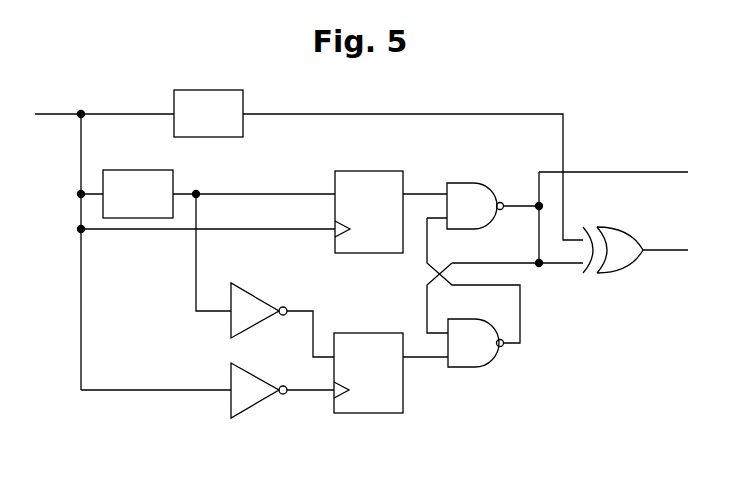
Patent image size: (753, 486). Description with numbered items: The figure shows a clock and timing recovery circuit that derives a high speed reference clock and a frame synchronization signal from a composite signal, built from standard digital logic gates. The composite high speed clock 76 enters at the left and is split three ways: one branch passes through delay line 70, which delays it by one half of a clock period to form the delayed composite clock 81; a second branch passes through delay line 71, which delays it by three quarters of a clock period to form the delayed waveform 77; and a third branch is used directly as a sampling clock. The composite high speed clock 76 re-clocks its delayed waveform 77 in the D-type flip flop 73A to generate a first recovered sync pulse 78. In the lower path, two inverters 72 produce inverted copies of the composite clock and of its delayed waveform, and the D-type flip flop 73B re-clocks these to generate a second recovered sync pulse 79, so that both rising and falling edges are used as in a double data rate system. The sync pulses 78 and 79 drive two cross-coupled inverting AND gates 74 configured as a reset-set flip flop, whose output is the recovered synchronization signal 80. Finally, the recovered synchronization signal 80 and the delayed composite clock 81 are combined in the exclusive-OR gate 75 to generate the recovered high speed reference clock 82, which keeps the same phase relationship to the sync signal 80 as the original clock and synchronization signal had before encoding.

The delay line 70 is at (209, 90).
The delay line 71 is at (133, 170).
The inverter 72 is at (253, 293).
The D-type flip flop 73A is at (368, 171).
The D-type flip flop 73B is at (368, 333).
The inverting AND gate 74 is at (470, 183).
The exclusive-OR gate 75 is at (608, 273).
The composite high speed clock 76 is at (62, 112).
The delayed waveform 77 is at (282, 193).
The first recovered sync pulse 78 is at (425, 193).
The second recovered sync pulse 79 is at (422, 358).
The recovered synchronization signal 80 is at (607, 172).
The delayed composite clock 81 is at (414, 113).
The recovered high speed reference clock 82 is at (664, 249).